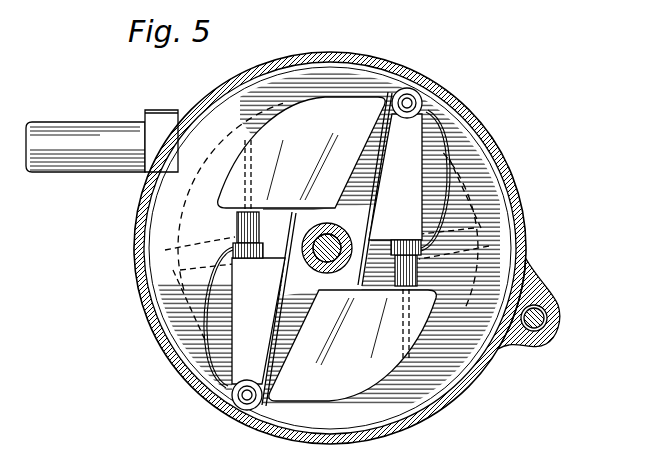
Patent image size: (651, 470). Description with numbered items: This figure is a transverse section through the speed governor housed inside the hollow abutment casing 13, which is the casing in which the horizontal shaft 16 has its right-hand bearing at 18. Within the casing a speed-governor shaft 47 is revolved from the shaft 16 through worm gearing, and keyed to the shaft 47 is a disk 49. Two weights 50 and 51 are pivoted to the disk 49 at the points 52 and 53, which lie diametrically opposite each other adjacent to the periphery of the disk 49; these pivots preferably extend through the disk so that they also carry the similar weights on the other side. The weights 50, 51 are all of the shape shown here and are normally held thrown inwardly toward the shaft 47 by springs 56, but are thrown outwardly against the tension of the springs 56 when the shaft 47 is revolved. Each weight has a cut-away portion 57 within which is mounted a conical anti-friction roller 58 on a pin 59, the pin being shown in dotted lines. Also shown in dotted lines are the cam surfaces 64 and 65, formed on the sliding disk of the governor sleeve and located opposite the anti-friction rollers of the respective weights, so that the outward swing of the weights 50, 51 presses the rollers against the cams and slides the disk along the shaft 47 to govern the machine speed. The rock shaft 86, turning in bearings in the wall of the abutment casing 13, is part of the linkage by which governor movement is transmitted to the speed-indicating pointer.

The abutment casing 13 is at (343, 248).
The horizontal shaft 16 is at (45, 130).
The bearing 18 is at (161, 122).
The speed-governor shaft 47 is at (322, 260).
The disk 49 is at (166, 222).
The weight 50 is at (301, 152).
The weight 51 is at (352, 345).
The pivot 52 is at (243, 393).
The pivot 53 is at (409, 101).
The spring 56 is at (216, 282).
The cut-away portion 57 is at (267, 230).
The conical anti-friction roller 58 is at (386, 224).
The pin 59 is at (252, 167).
The cam surface 64 is at (327, 249).
The cam surface 65 is at (494, 250).
The rock shaft 86 is at (538, 313).